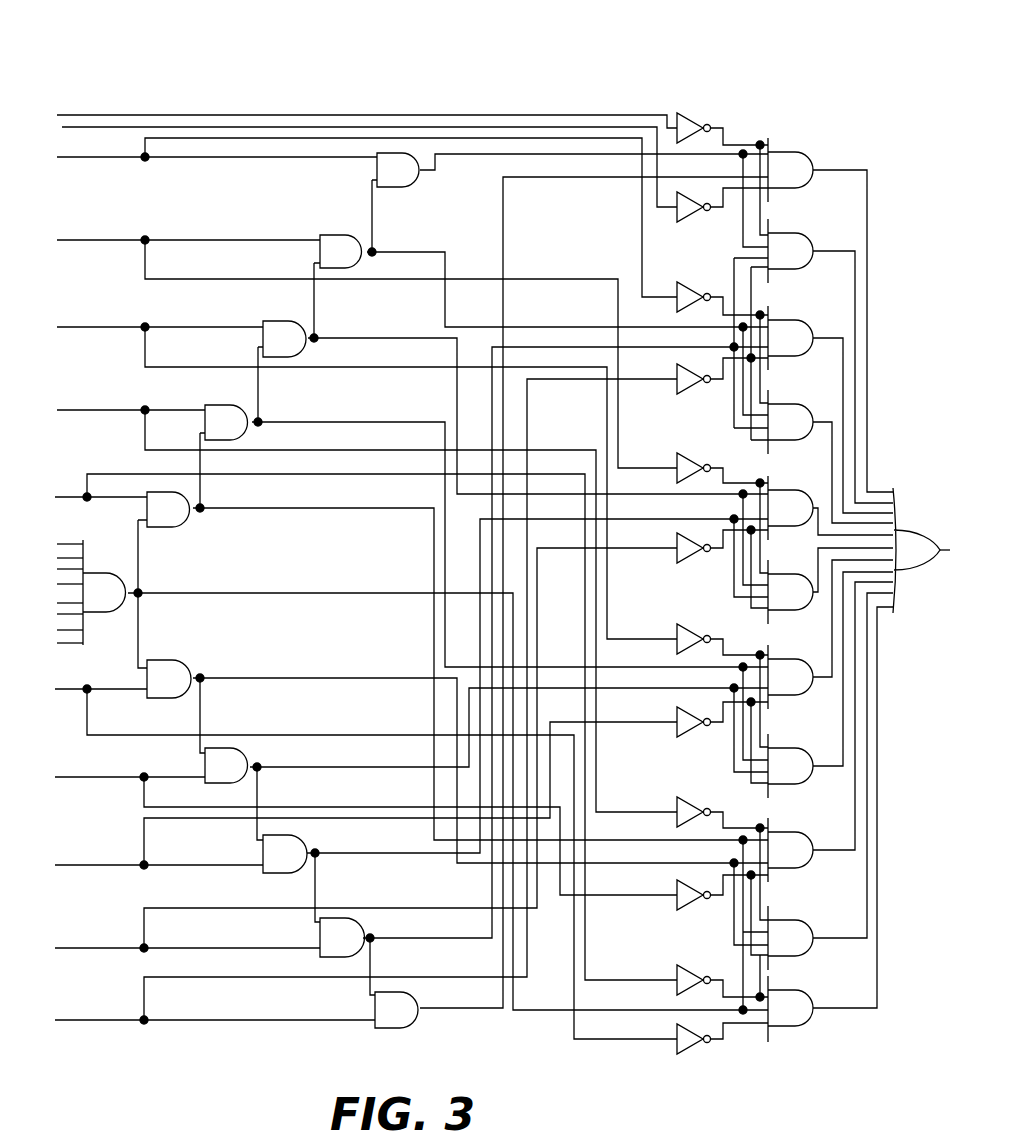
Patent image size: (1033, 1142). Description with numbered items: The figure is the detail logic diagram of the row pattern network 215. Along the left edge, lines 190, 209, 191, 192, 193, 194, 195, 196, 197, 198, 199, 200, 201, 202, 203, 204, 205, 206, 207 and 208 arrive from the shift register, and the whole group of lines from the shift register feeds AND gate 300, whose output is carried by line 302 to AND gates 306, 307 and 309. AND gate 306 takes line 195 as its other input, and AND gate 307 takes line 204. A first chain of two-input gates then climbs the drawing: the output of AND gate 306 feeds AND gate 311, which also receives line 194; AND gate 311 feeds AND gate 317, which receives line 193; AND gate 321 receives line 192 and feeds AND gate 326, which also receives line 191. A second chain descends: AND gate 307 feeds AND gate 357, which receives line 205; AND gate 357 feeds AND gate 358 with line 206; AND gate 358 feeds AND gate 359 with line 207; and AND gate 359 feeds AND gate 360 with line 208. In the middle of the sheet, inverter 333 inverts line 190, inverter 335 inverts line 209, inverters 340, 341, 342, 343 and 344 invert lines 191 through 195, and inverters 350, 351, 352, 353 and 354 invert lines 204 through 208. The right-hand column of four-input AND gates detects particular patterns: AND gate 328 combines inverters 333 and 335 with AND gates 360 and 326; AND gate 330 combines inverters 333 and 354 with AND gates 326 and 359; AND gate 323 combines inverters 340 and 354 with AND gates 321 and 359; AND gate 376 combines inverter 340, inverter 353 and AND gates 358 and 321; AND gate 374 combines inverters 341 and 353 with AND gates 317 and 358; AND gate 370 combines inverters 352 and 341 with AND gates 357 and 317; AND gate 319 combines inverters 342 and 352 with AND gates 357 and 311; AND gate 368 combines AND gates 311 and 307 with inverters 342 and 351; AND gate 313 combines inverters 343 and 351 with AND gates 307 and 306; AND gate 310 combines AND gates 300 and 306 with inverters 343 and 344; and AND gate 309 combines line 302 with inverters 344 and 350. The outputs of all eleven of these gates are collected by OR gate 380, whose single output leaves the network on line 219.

The line 190 is at (122, 115).
The line 209 is at (108, 130).
The line 191 is at (107, 158).
The line 192 is at (108, 240).
The line 193 is at (108, 327).
The line 194 is at (108, 410).
The line 195 is at (60, 495).
The line 196 is at (62, 545).
The line 197 is at (62, 558).
The line 198 is at (62, 569).
The line 199 is at (62, 584).
The line 200 is at (62, 603).
The line 201 is at (62, 614).
The line 202 is at (62, 630).
The line 203 is at (62, 644).
The line 204 is at (80, 687).
The line 205 is at (98, 777).
The line 206 is at (98, 865).
The line 207 is at (100, 948).
The line 208 is at (100, 1020).
The row pattern network 215 is at (762, 49).
The output line of OR gate 380 219 is at (940, 556).
The AND gate 300 is at (106, 606).
The line 302 is at (138, 585).
The AND gate 306 is at (170, 521).
The AND gate 307 is at (170, 690).
The AND gate 309 is at (810, 983).
The AND gate 310 is at (810, 913).
The AND gate 311 is at (228, 434).
The AND gate 313 is at (810, 825).
The AND gate 317 is at (286, 350).
The AND gate 319 is at (810, 652).
The AND gate 321 is at (343, 263).
The AND gate 323 is at (810, 313).
The AND gate 326 is at (400, 181).
The AND gate 328 is at (805, 152).
The AND gate 330 is at (810, 225).
The inverter 333 is at (698, 122).
The inverter 335 is at (694, 217).
The inverter 340 is at (697, 290).
The inverter 341 is at (697, 461).
The inverter 342 is at (697, 632).
The inverter 343 is at (697, 805).
The inverter 344 is at (697, 973).
The inverter 350 is at (694, 1050).
The inverter 351 is at (694, 905).
The inverter 352 is at (694, 732).
The inverter 353 is at (694, 558).
The inverter 354 is at (694, 389).
The AND gate 357 is at (228, 777).
The AND gate 358 is at (286, 865).
The AND gate 359 is at (343, 949).
The AND gate 360 is at (398, 1021).
The AND gate 368 is at (810, 741).
The AND gate 370 is at (810, 567).
The AND gate 374 is at (810, 483).
The AND gate 376 is at (810, 397).
The OR gate 380 is at (940, 530).